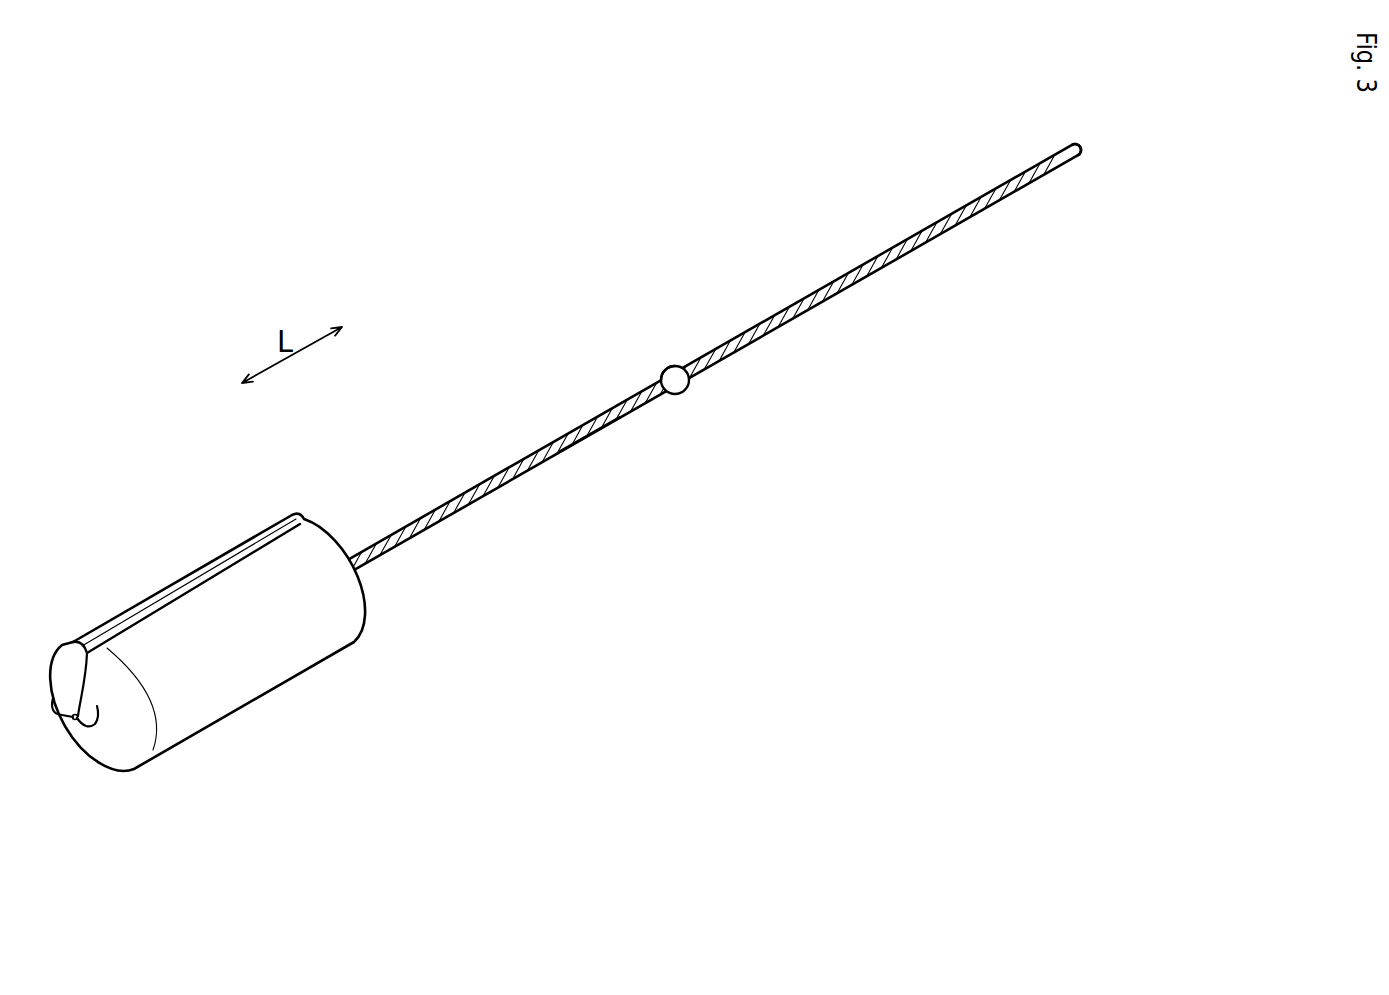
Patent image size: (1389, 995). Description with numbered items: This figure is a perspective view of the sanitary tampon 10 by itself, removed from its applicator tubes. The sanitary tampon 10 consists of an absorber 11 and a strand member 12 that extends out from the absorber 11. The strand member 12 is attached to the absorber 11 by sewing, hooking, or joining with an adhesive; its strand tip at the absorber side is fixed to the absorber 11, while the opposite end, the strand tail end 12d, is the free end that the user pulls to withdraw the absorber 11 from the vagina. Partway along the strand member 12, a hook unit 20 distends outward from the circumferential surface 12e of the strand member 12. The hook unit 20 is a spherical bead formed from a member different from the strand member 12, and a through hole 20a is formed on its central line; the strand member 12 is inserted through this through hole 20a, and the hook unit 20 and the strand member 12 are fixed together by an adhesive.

The sanitary tampon 10 is at (591, 476).
The absorber 11 is at (225, 675).
The strand member 12 is at (738, 358).
The strand tail end 12d is at (1079, 148).
The circumferential surface 12e is at (593, 431).
The hook unit 20 is at (666, 386).
The through hole 20a is at (659, 381).